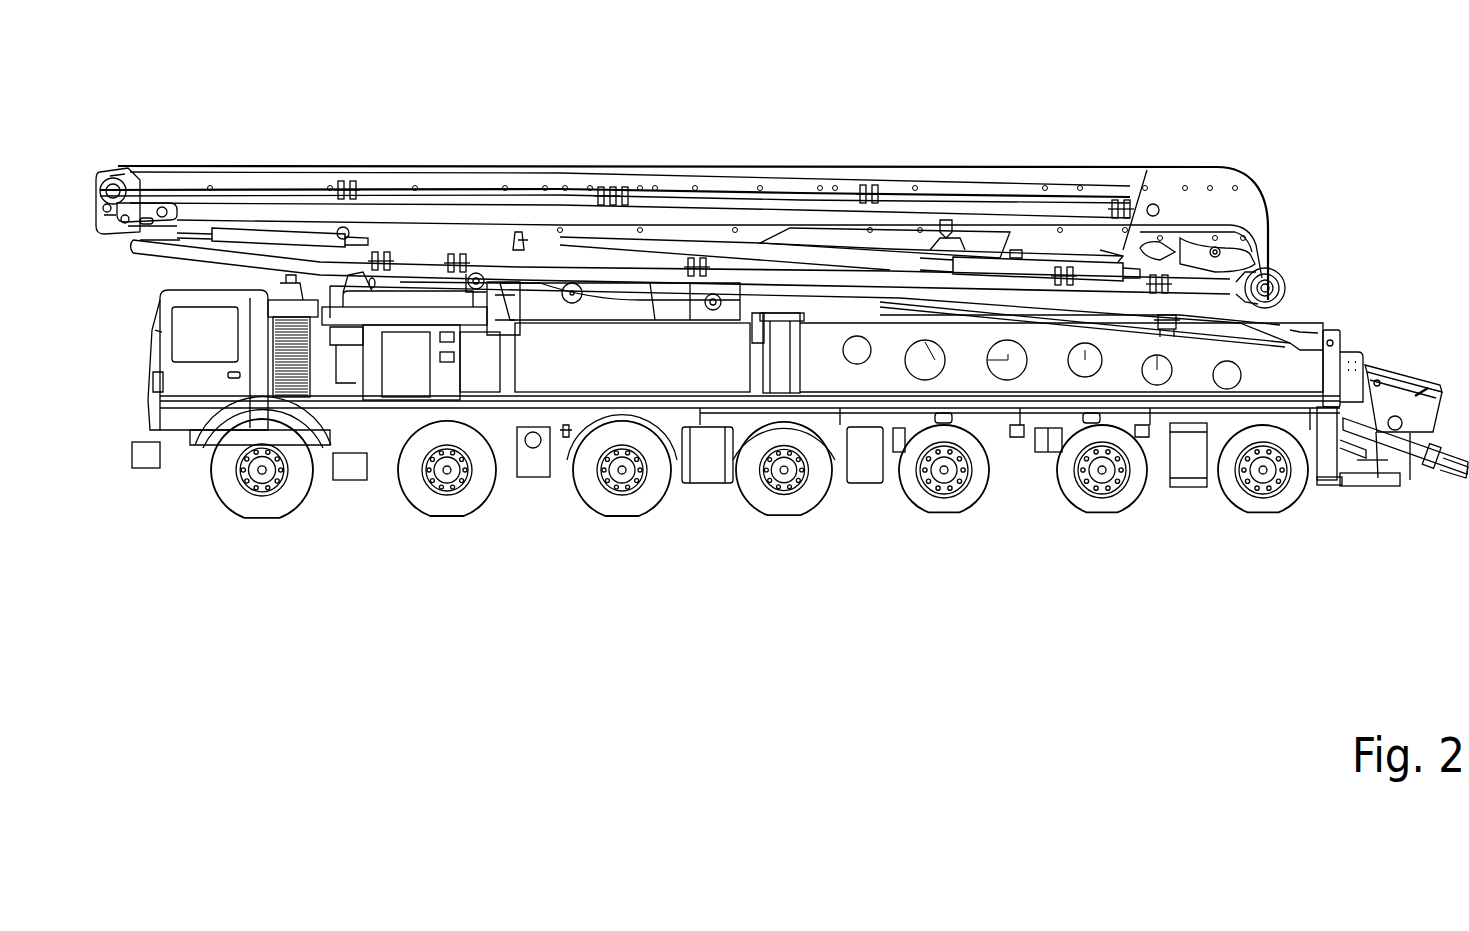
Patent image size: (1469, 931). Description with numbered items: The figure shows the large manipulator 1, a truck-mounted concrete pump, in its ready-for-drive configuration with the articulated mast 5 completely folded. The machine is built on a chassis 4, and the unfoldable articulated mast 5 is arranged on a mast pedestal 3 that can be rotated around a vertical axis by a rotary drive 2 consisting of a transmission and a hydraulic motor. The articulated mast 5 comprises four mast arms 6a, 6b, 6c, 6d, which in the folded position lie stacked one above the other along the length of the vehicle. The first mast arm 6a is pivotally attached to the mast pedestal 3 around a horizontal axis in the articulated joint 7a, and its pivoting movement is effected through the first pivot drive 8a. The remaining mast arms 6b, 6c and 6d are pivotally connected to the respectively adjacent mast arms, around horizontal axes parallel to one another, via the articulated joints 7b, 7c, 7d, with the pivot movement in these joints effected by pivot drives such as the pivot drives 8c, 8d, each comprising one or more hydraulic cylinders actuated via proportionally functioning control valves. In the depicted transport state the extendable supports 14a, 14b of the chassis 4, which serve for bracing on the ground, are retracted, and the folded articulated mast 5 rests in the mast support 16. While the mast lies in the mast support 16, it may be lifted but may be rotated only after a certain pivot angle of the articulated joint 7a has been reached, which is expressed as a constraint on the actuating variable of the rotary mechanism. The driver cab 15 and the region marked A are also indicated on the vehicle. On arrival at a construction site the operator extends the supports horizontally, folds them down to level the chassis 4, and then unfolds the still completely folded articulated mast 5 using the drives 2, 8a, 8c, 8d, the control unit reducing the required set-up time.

The large manipulator 1 is at (735, 115).
The rotary drive 2 is at (348, 342).
The mast pedestal 3 is at (403, 285).
The chassis 4 is at (717, 365).
The articulated mast 5 is at (322, 143).
The first mast arm 6a is at (1132, 303).
The second mast arm 6b is at (1168, 183).
The third mast arm 6c is at (538, 257).
The fourth mast arm 6d is at (997, 240).
The first articulated joint 7a is at (482, 292).
The second articulated joint 7b is at (1288, 302).
The third articulated joint 7c is at (112, 195).
The fourth articulated joint 7d is at (1263, 302).
The first pivot drive 8a is at (802, 305).
The third pivot drive 8c is at (270, 235).
The fourth pivot drive 8d is at (1055, 265).
The extendable support 14a is at (1333, 330).
The extendable support 14b is at (375, 390).
The driver cab 15 is at (210, 338).
The mast support 16 is at (1170, 327).
The boom tip A is at (126, 230).